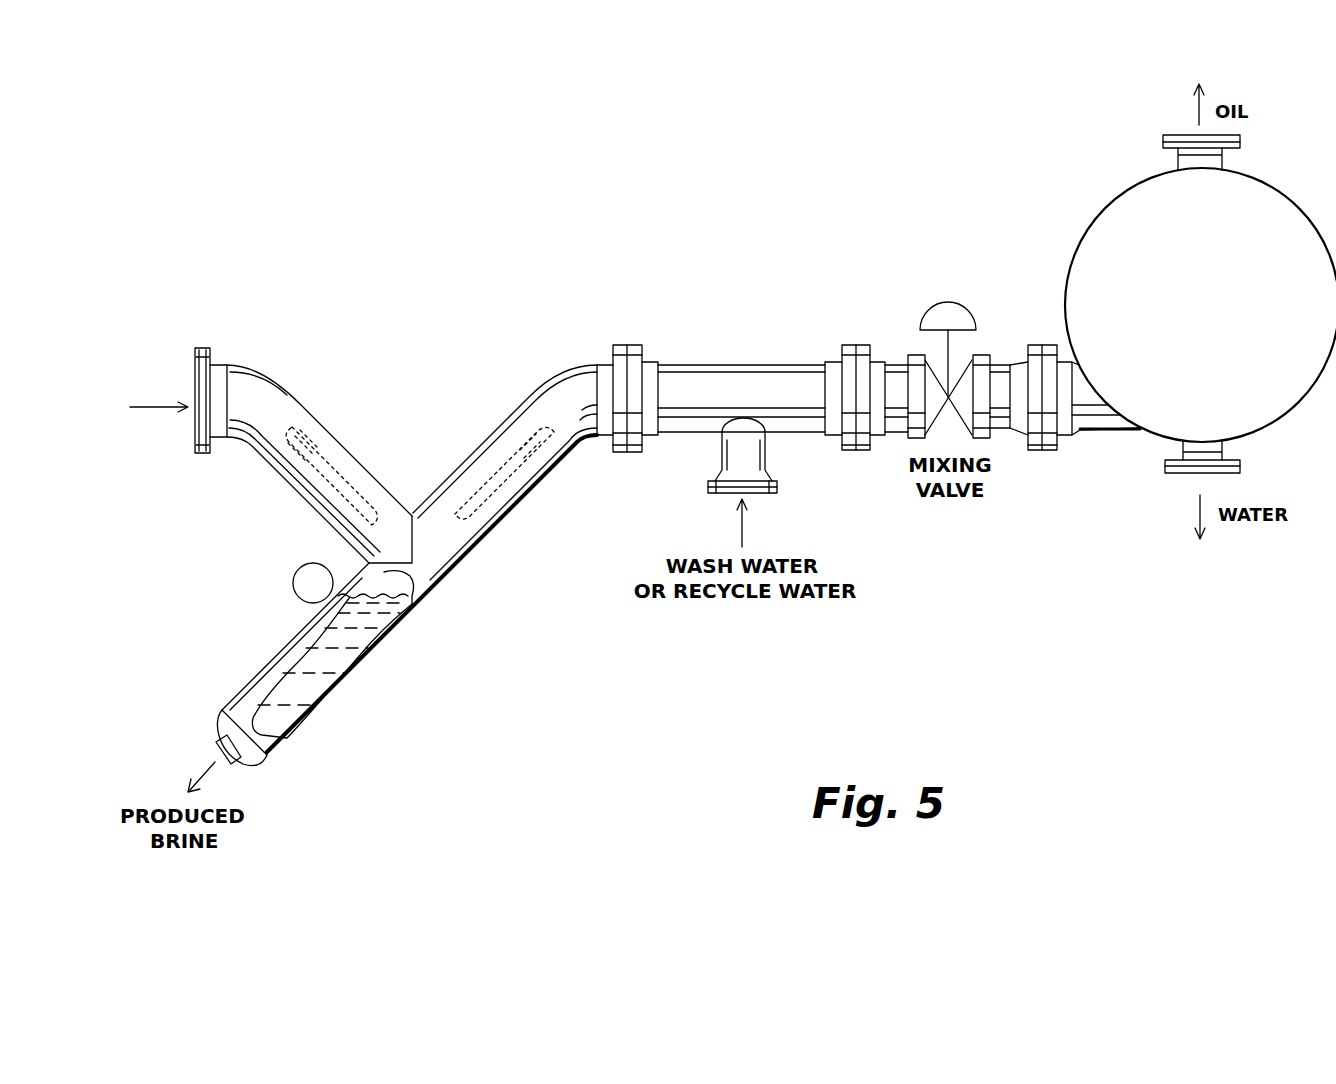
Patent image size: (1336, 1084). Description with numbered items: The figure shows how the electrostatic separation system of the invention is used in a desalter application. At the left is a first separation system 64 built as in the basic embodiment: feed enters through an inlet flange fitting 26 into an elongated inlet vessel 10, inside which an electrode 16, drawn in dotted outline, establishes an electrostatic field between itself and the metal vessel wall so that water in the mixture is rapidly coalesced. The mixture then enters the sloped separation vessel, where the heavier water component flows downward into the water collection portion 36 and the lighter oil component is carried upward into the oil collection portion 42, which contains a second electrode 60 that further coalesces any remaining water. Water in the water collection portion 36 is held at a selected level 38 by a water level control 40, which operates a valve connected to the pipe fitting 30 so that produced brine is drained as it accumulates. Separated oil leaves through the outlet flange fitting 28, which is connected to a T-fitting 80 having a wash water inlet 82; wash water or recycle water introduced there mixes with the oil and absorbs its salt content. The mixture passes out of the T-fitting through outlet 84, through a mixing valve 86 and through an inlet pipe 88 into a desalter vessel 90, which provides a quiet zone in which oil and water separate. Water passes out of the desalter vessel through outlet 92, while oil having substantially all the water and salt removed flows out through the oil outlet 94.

The inlet vessel 10 is at (300, 493).
The electrode 16 is at (358, 419).
The inlet flange fitting 26 is at (200, 440).
The outlet flange fitting 28 is at (612, 352).
The pipe fitting 30 is at (222, 737).
The water collection portion 36 is at (334, 695).
The water level 38 is at (420, 597).
The water level control 40 is at (293, 586).
The oil collection portion 42 is at (467, 557).
The second electrode 60 is at (548, 509).
The first separation system 64 is at (440, 445).
The T-fitting 80 is at (705, 368).
The wash water inlet 82 is at (768, 492).
The outlet 84 is at (847, 352).
The mixing valve 86 is at (980, 352).
The inlet pipe 88 is at (1095, 426).
The desalter vessel 90 is at (1100, 207).
The outlet 92 is at (1180, 472).
The oil outlet 94 is at (1228, 137).